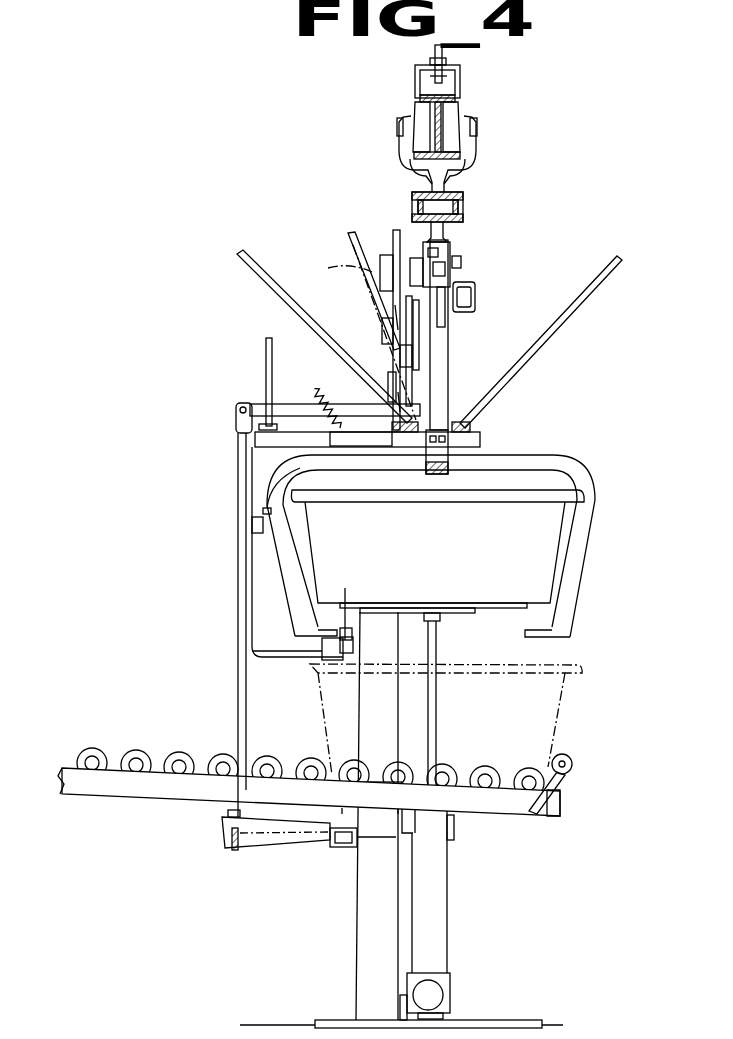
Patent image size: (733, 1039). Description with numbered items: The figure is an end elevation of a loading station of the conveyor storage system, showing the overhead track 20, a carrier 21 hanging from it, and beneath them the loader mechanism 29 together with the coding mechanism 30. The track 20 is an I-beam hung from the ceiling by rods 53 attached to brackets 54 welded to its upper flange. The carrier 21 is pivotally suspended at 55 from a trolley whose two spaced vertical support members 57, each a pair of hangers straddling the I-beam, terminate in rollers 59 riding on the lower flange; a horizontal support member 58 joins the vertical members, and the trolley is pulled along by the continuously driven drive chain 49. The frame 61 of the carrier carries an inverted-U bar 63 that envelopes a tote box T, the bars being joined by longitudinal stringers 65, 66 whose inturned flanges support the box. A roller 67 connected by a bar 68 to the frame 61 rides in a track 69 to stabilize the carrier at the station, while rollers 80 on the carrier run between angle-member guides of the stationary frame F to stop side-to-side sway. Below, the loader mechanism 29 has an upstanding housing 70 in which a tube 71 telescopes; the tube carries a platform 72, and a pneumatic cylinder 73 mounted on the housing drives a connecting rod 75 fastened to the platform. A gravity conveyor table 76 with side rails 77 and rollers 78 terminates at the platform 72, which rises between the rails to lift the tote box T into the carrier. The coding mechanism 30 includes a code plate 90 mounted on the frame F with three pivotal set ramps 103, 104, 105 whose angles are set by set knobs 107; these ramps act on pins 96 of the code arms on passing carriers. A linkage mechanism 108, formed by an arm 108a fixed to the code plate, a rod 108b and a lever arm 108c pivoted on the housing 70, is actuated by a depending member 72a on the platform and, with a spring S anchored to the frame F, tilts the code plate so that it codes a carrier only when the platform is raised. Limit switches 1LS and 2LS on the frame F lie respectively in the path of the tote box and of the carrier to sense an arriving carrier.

The track 20 is at (460, 99).
The carrier 21 is at (507, 440).
The loader mechanism 29 is at (470, 852).
The coding mechanism 30 is at (376, 230).
The drive chain 49 is at (463, 195).
The rods 53 is at (446, 53).
The brackets 54 is at (460, 79).
The pivotal suspension 55 is at (450, 246).
The vertical support members 57 is at (477, 150).
The horizontal support member 58 is at (452, 224).
The rollers 59 is at (450, 126).
The frame 61 is at (436, 270).
The bar 63 is at (595, 492).
The longitudinal stringer 65 is at (335, 612).
The longitudinal stringer 66 is at (543, 632).
The roller 67 is at (466, 290).
The bar 68 is at (440, 320).
The track 69 is at (455, 266).
The housing 70 is at (357, 903).
The tube 71 is at (398, 732).
The platform 72 is at (468, 770).
The depending member 72a is at (318, 828).
The pneumatic cylinder 73 is at (445, 940).
The connecting rod 75 is at (437, 702).
The gravity conveyor table 76 is at (82, 775).
The side rails 77 is at (68, 793).
The rollers 78 is at (122, 754).
The rollers 80 is at (440, 424).
The code plate 90 is at (372, 268).
The pin 96 is at (400, 400).
The pivotal set ramp 103 is at (408, 305).
The pivotal set ramp 104 is at (406, 341).
The pivotal set ramp 105 is at (425, 364).
The set knobs 107 is at (392, 323).
The linkage mechanism 108 is at (235, 706).
The arm 108a is at (256, 404).
The rod 108b is at (238, 590).
The lever arm 108c is at (272, 850).
The limit switch 1LS is at (330, 652).
The limit switch 2LS is at (252, 524).
The frame F is at (256, 660).
The tray I is at (447, 556).
The spring S is at (340, 410).
The tote box T is at (562, 700).